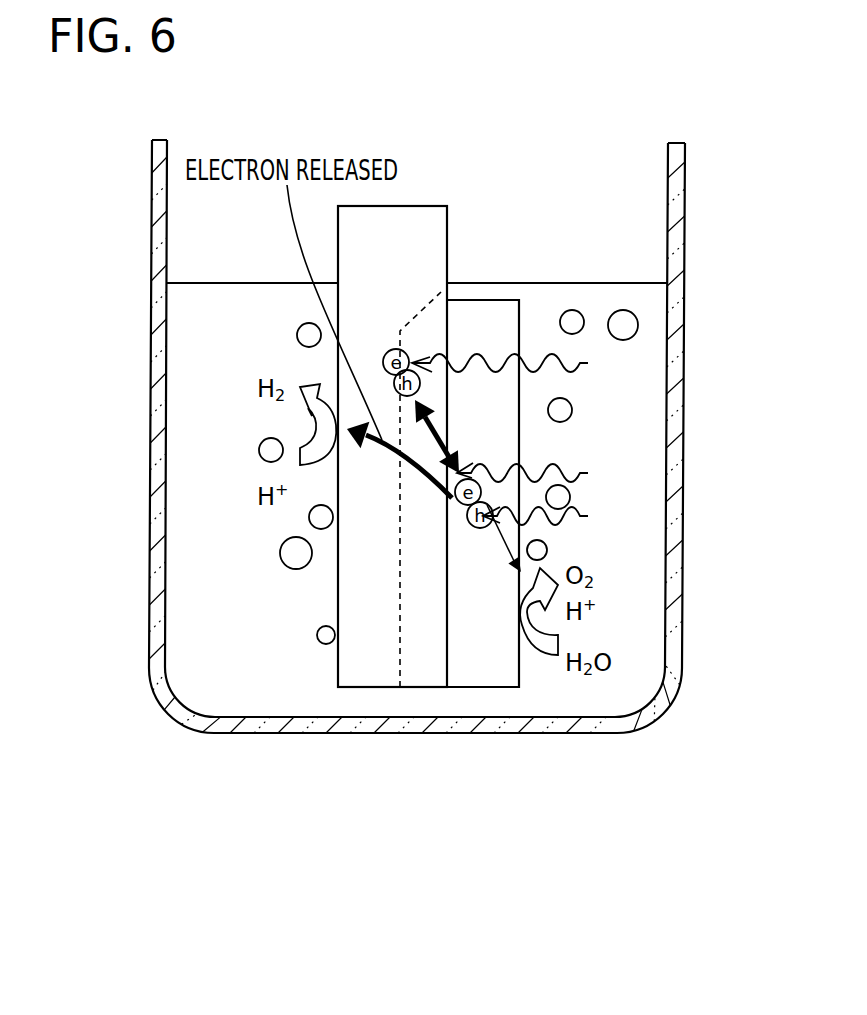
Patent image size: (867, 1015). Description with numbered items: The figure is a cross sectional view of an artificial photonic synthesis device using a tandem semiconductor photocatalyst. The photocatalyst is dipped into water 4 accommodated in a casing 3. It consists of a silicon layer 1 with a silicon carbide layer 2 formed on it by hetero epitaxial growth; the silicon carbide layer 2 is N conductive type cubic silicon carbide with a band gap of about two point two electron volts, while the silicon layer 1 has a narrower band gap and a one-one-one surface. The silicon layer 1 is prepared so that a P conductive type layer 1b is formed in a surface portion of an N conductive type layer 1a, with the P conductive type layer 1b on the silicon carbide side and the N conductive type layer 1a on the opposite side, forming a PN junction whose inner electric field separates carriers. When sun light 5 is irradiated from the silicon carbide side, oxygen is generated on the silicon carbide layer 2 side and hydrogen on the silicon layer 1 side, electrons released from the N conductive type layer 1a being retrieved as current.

The silicon layer 1 is at (392, 530).
The N conductive type layer 1a is at (358, 675).
The P conductive type layer 1b is at (421, 675).
The 3C-SiC layer 2 is at (488, 675).
The casing 3 is at (685, 188).
The water 4 is at (633, 260).
The sun light 5 is at (600, 345).